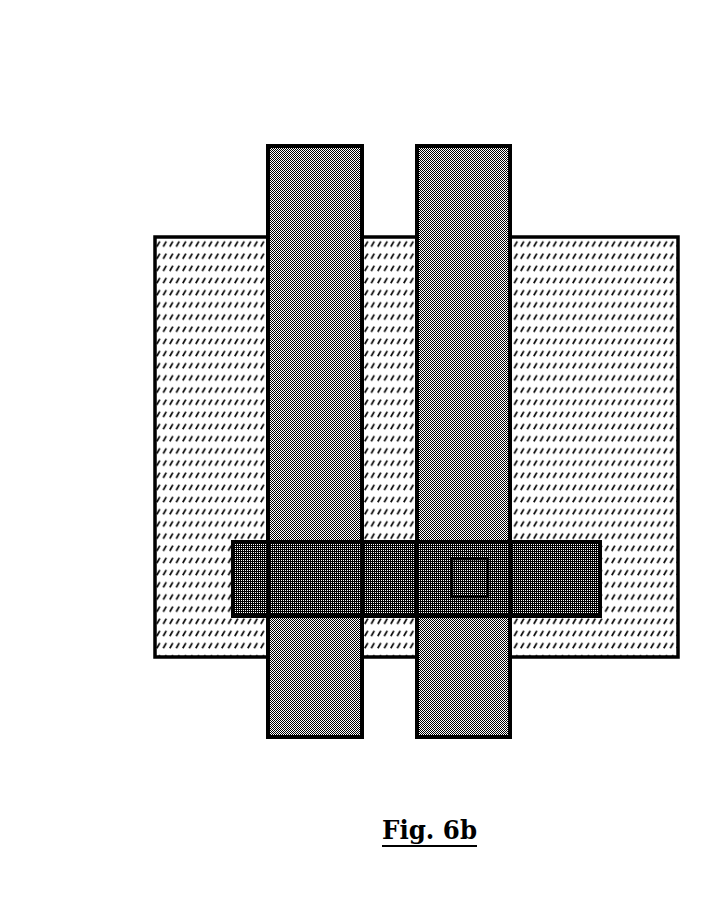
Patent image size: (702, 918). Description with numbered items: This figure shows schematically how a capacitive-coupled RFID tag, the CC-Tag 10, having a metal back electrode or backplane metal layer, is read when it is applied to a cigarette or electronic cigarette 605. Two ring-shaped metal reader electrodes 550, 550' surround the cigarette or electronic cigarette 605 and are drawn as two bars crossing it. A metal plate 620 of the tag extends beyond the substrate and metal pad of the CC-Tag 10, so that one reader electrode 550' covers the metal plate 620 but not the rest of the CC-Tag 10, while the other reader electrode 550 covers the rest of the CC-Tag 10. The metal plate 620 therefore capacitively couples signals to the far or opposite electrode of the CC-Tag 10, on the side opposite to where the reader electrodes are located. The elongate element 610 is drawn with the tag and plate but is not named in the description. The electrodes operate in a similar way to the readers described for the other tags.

The cigarette or electronic cigarette 605 is at (416, 447).
The reader electrode 550' is at (345, 384).
The reader electrode 550 is at (500, 384).
The contact / interconnect bar 610 is at (241, 582).
The metal plate 620 is at (230, 630).
The CC-Tag 10 is at (482, 595).